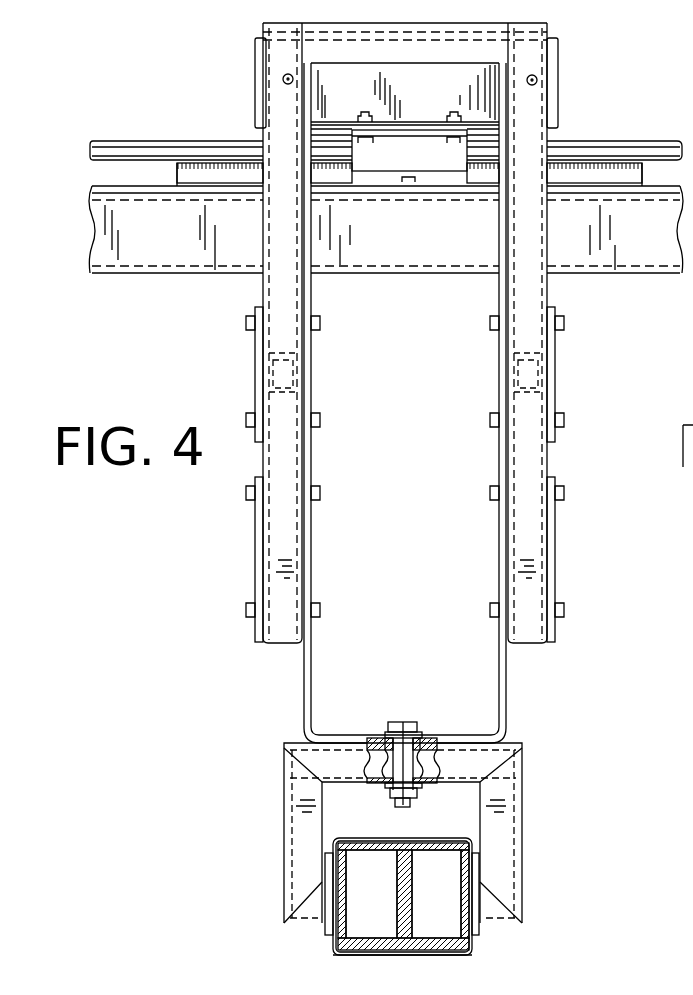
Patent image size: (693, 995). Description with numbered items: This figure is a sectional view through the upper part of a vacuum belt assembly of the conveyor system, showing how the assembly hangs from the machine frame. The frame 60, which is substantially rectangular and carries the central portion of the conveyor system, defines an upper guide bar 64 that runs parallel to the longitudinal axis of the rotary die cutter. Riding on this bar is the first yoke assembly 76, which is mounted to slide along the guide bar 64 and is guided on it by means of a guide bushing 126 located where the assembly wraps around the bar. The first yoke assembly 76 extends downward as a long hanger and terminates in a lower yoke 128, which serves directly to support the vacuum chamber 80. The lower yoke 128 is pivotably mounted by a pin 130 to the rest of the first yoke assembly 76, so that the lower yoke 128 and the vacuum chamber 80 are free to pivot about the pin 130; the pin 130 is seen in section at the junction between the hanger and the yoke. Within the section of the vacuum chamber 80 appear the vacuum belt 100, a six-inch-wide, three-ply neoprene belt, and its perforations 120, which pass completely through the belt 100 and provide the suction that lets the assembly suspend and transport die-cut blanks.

The frame 60 is at (160, 247).
The upper guide bar 64 is at (597, 150).
The first yoke assembly 76 is at (258, 525).
The vacuum chamber 80 is at (470, 865).
The vacuum belt 100 is at (472, 955).
The perforations 120 is at (447, 940).
The guide bushing 126 is at (450, 158).
The lower yoke 128 is at (307, 848).
The pin 130 is at (398, 762).